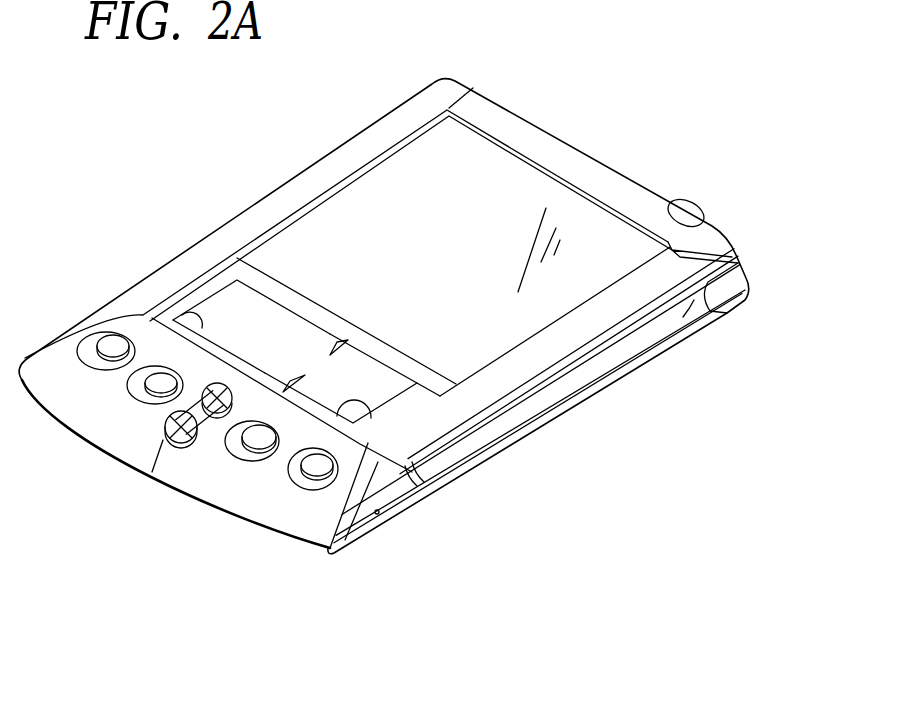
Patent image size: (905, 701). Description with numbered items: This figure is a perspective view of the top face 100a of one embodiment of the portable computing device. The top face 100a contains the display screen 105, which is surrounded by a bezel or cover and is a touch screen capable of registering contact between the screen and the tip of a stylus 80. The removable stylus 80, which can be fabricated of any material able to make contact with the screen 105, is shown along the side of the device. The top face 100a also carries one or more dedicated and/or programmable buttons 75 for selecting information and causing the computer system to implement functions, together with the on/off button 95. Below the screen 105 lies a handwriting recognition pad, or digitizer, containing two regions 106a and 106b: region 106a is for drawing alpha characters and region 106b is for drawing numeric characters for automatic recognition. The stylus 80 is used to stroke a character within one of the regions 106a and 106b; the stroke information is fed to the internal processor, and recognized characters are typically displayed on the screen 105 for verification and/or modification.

The top face 100a is at (192, 97).
The display screen 105 is at (458, 196).
The region 106a is at (268, 327).
The region 106b is at (355, 380).
The buttons 75 is at (111, 345).
The on/off button 95 is at (697, 210).
The stylus 80 is at (563, 392).